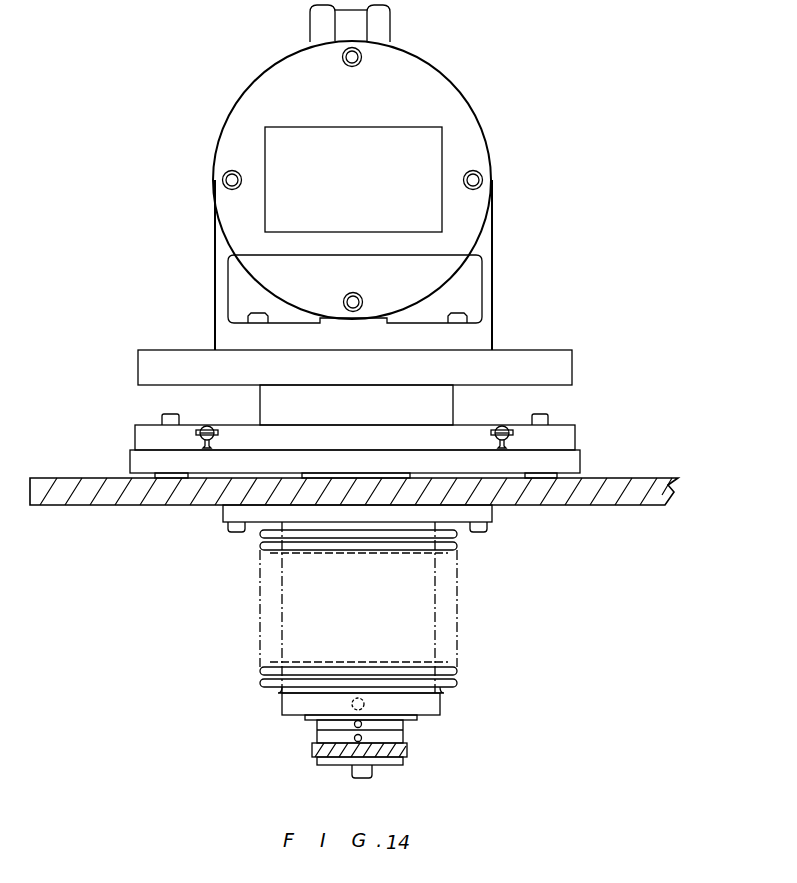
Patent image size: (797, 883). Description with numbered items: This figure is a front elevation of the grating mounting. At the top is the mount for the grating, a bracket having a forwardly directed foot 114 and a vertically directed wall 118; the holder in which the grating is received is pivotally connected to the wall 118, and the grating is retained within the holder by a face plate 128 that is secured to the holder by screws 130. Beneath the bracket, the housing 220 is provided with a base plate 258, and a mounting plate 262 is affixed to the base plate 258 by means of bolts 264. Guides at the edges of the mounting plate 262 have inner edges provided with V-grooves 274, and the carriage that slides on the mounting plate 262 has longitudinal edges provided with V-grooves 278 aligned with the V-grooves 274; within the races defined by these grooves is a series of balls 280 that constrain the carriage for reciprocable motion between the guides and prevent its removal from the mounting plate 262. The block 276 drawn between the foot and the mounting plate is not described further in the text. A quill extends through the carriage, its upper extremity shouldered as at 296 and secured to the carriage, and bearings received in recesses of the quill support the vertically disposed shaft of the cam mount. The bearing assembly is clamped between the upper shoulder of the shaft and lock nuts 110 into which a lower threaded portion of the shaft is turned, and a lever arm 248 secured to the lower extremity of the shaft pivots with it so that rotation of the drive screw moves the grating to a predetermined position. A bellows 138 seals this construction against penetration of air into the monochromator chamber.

The lock nuts 110 is at (317, 725).
The forwardly directed foot 114 is at (560, 350).
The vertically directed wall 118 is at (490, 262).
The face plate 128 is at (463, 125).
The screws 130 is at (342, 56).
The bellows 138 is at (452, 578).
The housing 220 is at (605, 506).
The lever arm 248 is at (407, 750).
The base plate 258 is at (650, 479).
The mounting plate 262 is at (575, 458).
The bolts 264 is at (160, 416).
The V-grooves 274 is at (207, 426).
The upper plate 276 is at (272, 428).
The V-grooves 278 is at (213, 427).
The balls 280 is at (208, 449).
The shoulder 296 is at (428, 393).